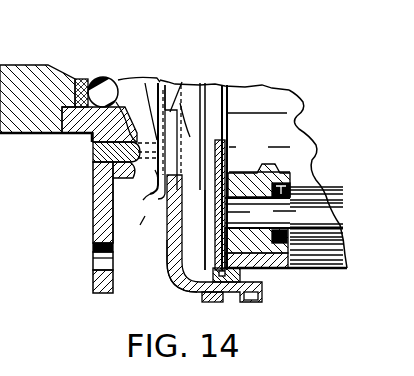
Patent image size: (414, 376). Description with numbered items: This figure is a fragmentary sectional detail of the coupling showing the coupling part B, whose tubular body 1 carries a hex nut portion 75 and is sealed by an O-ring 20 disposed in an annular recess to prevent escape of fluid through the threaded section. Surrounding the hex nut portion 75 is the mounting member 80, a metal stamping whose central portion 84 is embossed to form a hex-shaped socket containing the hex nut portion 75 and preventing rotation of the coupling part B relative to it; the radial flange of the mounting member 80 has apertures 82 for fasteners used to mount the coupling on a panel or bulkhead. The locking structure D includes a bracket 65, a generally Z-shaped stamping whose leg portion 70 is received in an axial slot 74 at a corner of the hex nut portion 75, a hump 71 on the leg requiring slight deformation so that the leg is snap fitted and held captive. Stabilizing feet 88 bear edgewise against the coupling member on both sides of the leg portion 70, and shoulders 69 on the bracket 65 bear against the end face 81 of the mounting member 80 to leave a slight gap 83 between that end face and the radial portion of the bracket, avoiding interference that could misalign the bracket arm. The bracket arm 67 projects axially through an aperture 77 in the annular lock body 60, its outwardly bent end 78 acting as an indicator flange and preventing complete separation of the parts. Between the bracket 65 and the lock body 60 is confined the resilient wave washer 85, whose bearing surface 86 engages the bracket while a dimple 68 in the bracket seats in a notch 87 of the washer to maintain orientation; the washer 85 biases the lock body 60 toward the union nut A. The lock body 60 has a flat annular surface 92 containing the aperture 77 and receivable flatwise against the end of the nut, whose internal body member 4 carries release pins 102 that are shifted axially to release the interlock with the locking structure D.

The coupling part B is at (31, 65).
The tubular body 1 is at (35, 136).
The hex nut portion 75 is at (80, 130).
The axial slot 74 is at (95, 158).
The leg portion 70 is at (95, 178).
The hump 71 is at (123, 210).
The aperture 82 is at (93, 248).
The mounting member 80 is at (93, 270).
The O-ring 20 is at (103, 77).
The shoulder 69 is at (148, 82).
The wave washer 85 is at (200, 110).
The end face 81 is at (168, 82).
The stabilizing feet 88 is at (182, 82).
The notch 87 is at (222, 173).
The union nut A is at (289, 118).
The internal body member 4 is at (268, 176).
The flat annular surface 92 is at (242, 232).
The release pin 102 is at (283, 213).
The dimple 68 is at (182, 217).
The annular lock body 60 is at (213, 260).
The locking structure D is at (167, 258).
The bracket 65 is at (177, 281).
The aperture 77 is at (217, 302).
The bracket arm 67 is at (237, 301).
The bent end 78 is at (262, 302).
The gap 83 is at (155, 170).
The bearing surface 86 is at (143, 200).
The central portion 84 is at (142, 228).